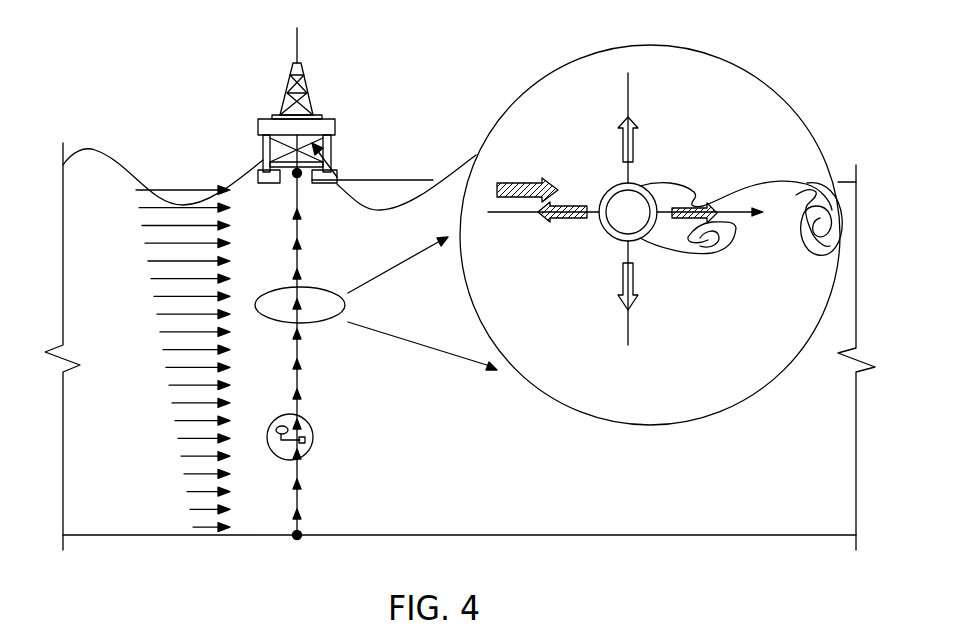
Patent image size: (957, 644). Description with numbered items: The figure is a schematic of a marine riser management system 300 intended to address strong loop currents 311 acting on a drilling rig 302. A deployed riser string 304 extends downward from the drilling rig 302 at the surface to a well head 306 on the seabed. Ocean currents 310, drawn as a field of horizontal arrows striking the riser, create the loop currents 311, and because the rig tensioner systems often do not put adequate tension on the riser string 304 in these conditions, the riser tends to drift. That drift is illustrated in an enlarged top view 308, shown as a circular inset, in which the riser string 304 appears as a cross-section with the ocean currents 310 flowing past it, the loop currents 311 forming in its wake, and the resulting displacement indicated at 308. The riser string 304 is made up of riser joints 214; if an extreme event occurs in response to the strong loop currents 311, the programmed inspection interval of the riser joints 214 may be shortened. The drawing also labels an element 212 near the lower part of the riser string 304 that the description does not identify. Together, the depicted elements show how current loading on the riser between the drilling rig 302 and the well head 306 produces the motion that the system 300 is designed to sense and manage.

The marine riser management system 300 is at (209, 133).
The drilling rig 302 is at (334, 119).
The deployed riser string 304 is at (305, 243).
The well head 306 is at (302, 532).
The top view of riser drift 308 is at (640, 150).
The ocean currents 310 is at (152, 278).
The loop currents 311 is at (742, 190).
The monitoring device 212 is at (288, 412).
The riser joints 214 is at (315, 436).